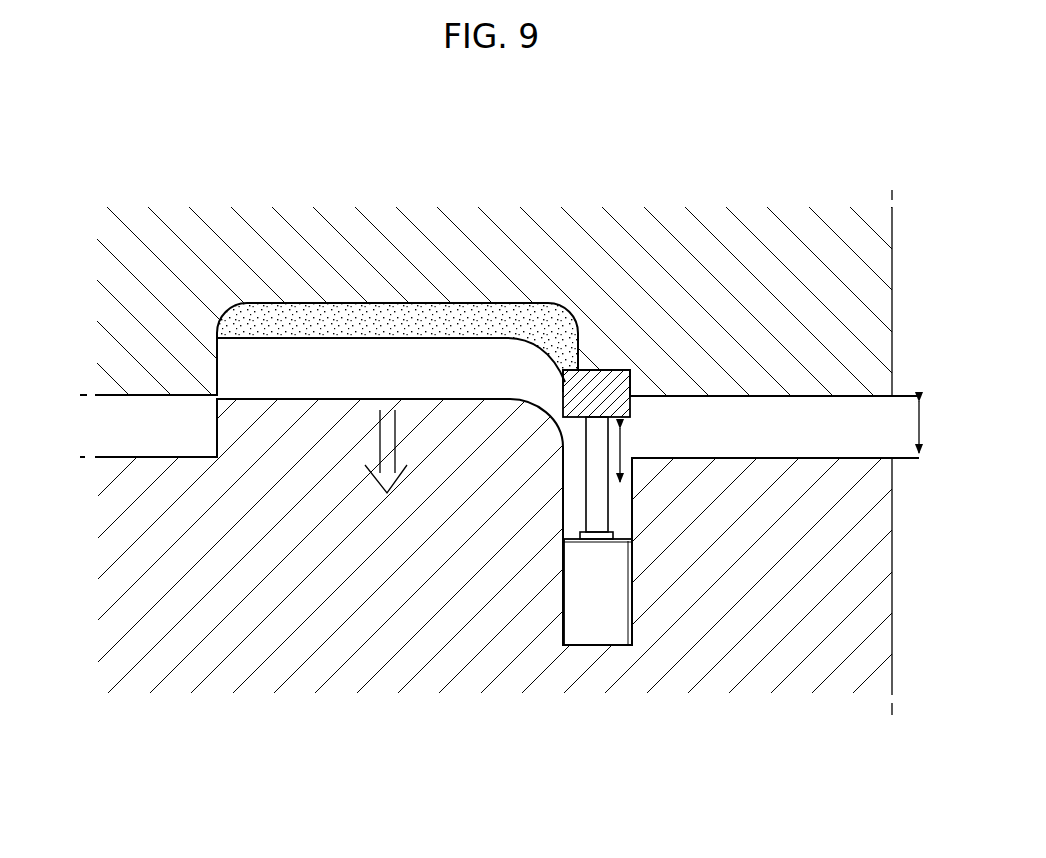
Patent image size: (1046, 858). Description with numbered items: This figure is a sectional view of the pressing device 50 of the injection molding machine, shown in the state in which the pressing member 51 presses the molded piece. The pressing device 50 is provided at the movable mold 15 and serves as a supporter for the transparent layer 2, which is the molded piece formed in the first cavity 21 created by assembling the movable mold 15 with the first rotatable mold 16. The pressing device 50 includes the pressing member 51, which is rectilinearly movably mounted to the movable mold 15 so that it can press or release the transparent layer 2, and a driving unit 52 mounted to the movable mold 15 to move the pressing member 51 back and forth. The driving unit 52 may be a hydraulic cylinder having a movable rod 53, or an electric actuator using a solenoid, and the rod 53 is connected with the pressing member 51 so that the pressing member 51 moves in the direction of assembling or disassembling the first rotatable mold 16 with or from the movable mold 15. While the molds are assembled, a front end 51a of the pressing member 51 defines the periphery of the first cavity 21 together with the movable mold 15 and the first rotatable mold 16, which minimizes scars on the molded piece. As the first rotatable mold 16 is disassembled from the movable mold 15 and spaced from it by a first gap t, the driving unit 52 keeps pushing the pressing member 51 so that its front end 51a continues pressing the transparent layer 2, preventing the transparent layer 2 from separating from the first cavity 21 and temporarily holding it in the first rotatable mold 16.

The transparent layer 2 is at (510, 323).
The movable mold 15 is at (737, 667).
The first rotatable mold 16 is at (755, 237).
The first cavity 21 is at (378, 359).
The pressing device 50 is at (577, 564).
The pressing member 51 is at (632, 398).
The front end of pressing member 51a is at (568, 380).
The driving unit 52 is at (605, 628).
The rod 53 is at (601, 503).
The first gap t is at (928, 427).